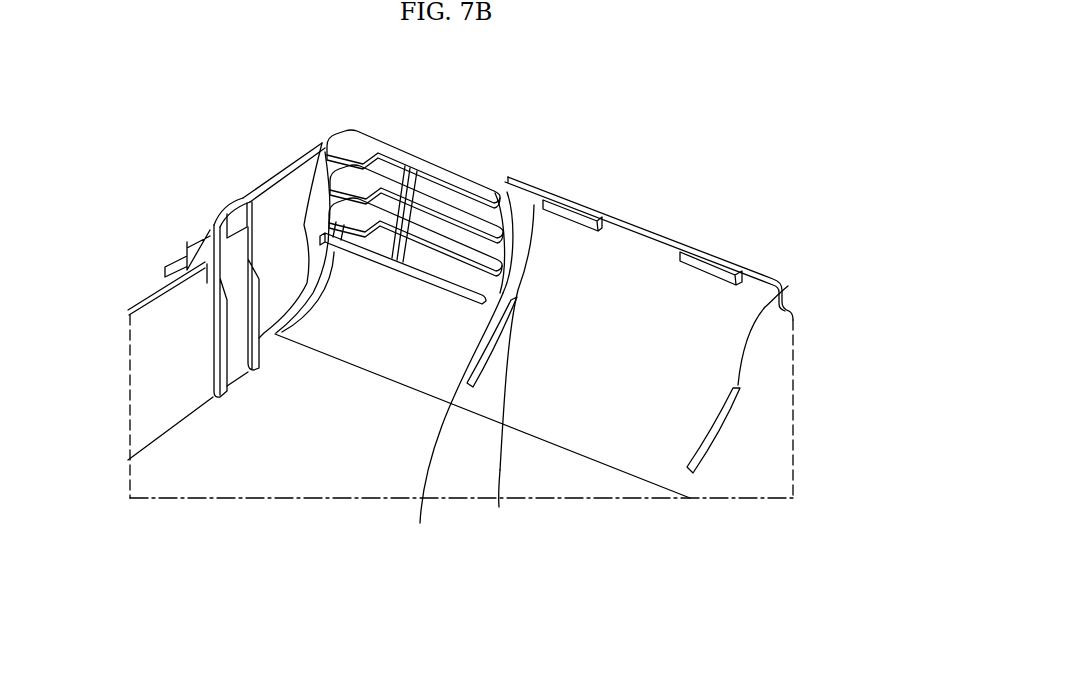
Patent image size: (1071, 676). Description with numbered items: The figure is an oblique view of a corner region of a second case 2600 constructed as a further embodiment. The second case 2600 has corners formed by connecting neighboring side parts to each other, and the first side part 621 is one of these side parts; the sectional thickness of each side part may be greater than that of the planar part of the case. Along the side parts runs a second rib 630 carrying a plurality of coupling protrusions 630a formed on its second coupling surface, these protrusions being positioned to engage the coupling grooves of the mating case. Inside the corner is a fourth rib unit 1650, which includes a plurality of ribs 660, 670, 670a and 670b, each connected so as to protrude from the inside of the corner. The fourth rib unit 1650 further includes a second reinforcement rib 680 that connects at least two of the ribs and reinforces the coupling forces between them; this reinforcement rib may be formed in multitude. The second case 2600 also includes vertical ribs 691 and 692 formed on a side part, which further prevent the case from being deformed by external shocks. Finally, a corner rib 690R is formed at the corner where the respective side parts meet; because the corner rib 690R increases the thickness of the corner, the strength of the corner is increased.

The second case 2600 is at (140, 182).
The first side part 621 is at (311, 143).
The second rib 630 is at (662, 250).
The coupling protrusions 630a is at (235, 212).
The rib 660 is at (406, 282).
The rib 670 is at (452, 253).
The rib 670a is at (422, 500).
The rib 670b is at (498, 512).
The second reinforcement rib 680 is at (390, 237).
The corner rib 690R is at (308, 280).
The vertical rib 691 is at (534, 205).
The vertical rib 692 is at (788, 286).
The fourth rib unit 1650 is at (361, 372).